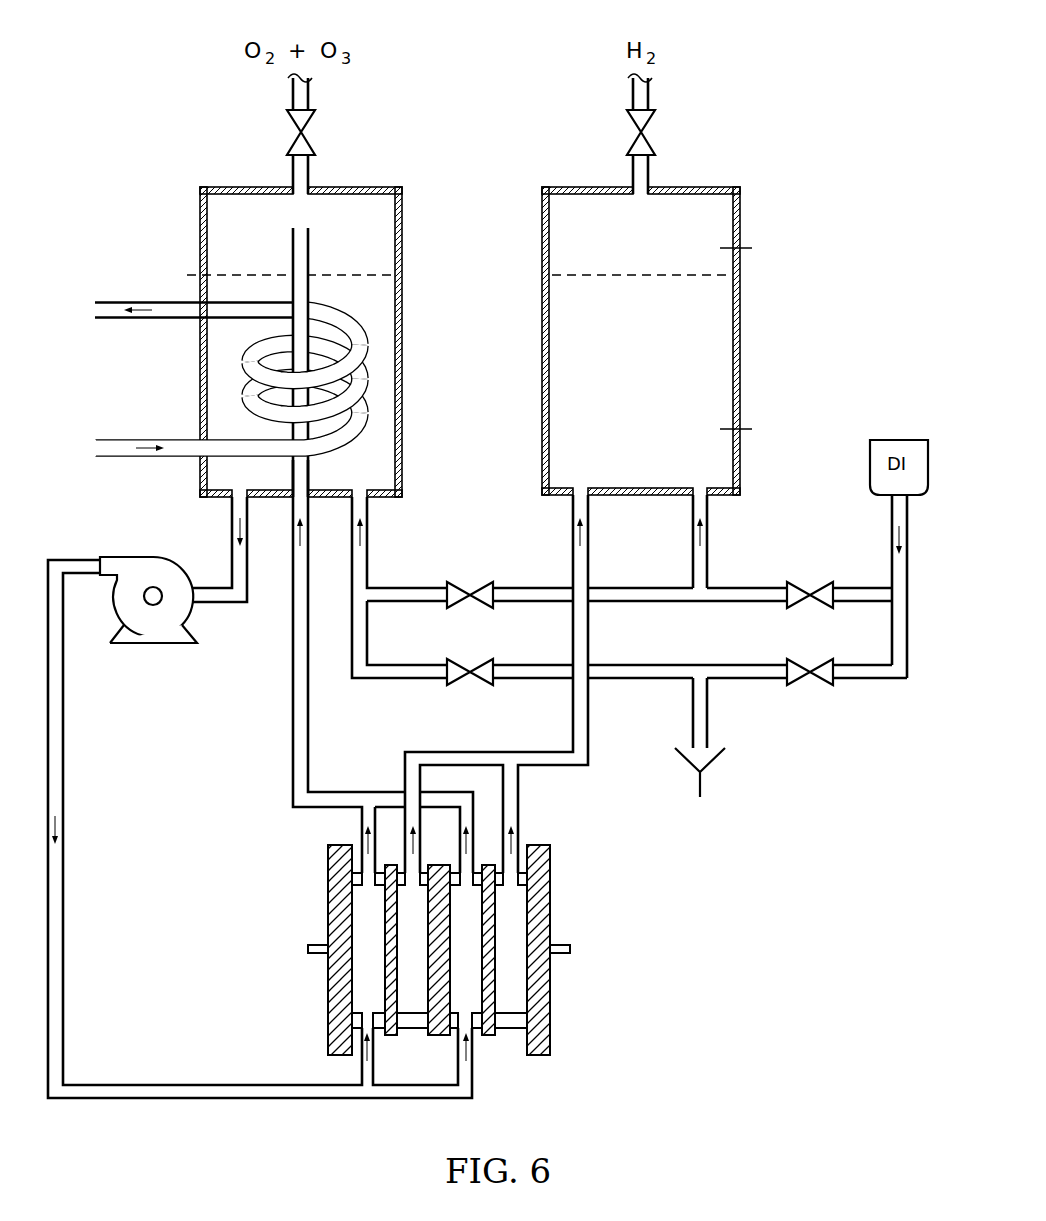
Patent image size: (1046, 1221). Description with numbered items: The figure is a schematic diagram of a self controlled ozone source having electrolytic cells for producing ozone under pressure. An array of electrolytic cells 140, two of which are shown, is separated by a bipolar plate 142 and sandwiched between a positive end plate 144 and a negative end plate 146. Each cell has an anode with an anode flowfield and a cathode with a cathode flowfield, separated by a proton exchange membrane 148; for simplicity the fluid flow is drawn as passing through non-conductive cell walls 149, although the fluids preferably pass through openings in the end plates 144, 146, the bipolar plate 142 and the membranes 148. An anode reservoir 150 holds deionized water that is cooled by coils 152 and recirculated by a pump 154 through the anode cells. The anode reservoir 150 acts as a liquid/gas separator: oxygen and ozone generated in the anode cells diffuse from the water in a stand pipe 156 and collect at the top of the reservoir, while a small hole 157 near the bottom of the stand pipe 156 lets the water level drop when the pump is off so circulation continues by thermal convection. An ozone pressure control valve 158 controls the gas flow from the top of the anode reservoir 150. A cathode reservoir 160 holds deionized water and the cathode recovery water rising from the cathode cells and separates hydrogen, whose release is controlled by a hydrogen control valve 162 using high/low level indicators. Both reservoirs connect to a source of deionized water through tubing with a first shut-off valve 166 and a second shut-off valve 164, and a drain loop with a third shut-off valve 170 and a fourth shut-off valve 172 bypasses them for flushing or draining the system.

The electrolytic cells 140 is at (459, 933).
The bipolar plate 142 is at (493, 983).
The positive end plate 144 is at (328, 893).
The negative end plate 146 is at (552, 893).
The proton exchange membrane 148 is at (527, 1000).
The non-conductive cell walls 149 is at (510, 1030).
The anode reservoir 150 is at (200, 212).
The coils 152 is at (284, 513).
The pump 154 is at (148, 645).
The stand pipe 156 is at (308, 230).
The small hole 157 is at (310, 472).
The ozone pressure control valve 158 is at (300, 133).
The cathode reservoir 160 is at (742, 216).
The hydrogen control valve 162 is at (633, 138).
The second shut-off valve 164 is at (458, 585).
The first shut-off valve 166 is at (798, 585).
The third shut-off valve 170 is at (458, 664).
The fourth shut-off valve 172 is at (798, 665).